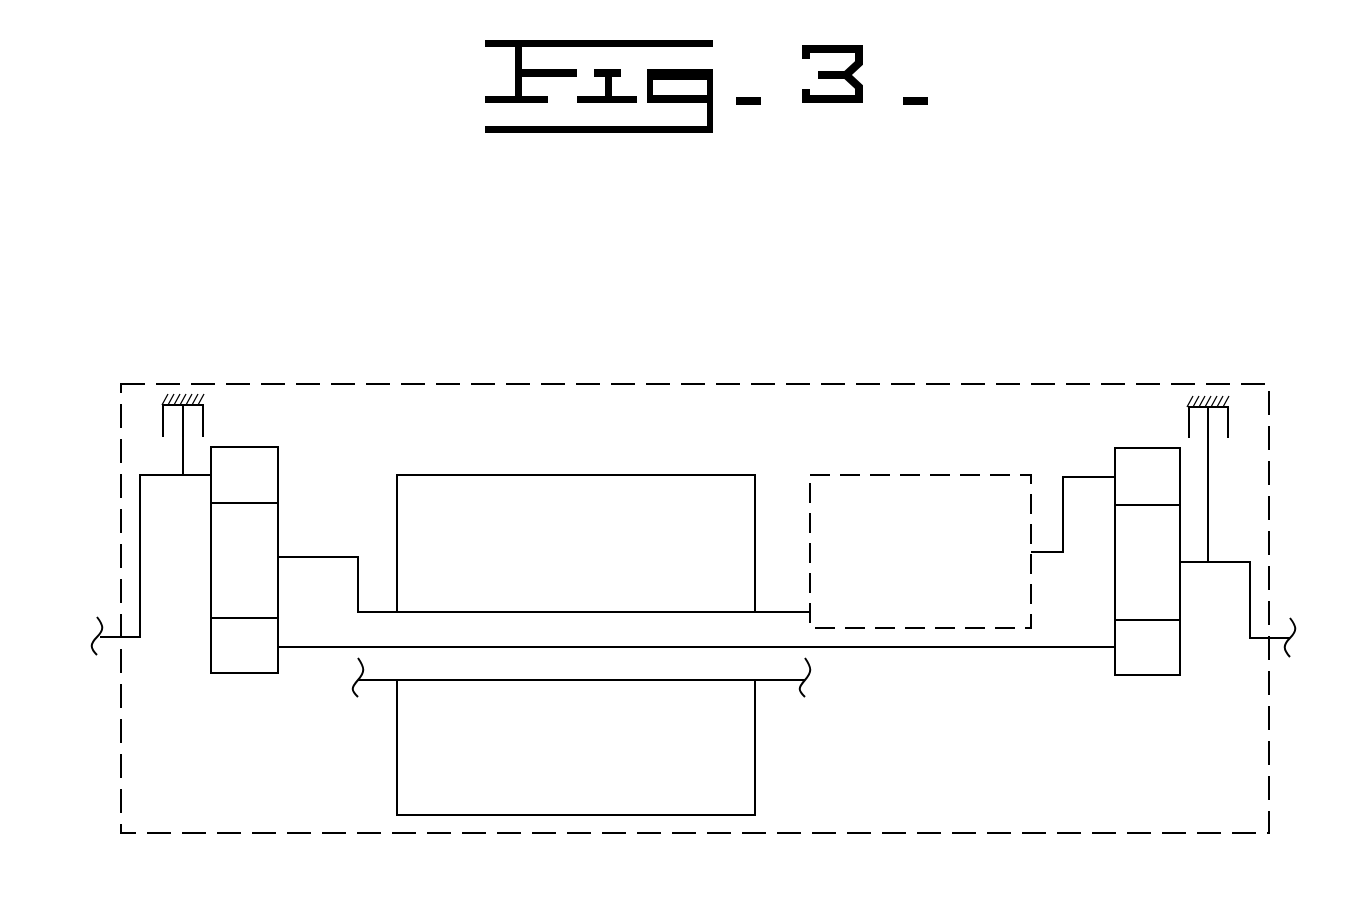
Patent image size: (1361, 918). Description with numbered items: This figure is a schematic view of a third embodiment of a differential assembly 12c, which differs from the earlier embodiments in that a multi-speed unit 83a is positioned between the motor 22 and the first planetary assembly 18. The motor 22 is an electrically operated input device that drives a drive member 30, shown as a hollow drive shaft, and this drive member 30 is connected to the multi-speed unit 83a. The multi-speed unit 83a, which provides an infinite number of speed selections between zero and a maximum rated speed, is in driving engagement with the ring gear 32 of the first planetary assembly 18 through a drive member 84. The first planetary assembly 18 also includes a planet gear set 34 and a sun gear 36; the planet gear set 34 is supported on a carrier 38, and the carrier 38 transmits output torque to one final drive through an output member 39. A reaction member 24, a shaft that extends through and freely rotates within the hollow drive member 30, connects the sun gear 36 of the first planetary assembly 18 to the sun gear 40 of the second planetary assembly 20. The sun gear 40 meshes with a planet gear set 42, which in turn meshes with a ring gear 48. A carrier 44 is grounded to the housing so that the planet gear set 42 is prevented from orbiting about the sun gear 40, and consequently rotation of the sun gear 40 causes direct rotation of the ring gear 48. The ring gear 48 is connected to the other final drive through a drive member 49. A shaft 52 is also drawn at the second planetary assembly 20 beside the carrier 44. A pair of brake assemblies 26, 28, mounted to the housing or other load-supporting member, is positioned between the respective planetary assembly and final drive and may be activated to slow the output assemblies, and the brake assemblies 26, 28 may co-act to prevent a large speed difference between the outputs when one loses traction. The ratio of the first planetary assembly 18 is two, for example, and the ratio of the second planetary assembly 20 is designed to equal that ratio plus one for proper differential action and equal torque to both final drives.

The differential assembly 12c is at (745, 380).
The motor 22 is at (578, 475).
The multi-speed unit 83a is at (893, 470).
The second planetary assembly 20 is at (265, 533).
The ring gear 48 is at (244, 475).
The planet gear set 42 is at (244, 560).
The sun gear 40 is at (244, 645).
The first planetary assembly 18 is at (1102, 565).
The ring gear 32 is at (1147, 476).
The planet gear set 34 is at (1147, 562).
The sun gear 36 is at (1147, 647).
The brake assembly 28 is at (150, 408).
The brake assembly 26 is at (1252, 395).
The drive member 49 is at (138, 557).
The shaft 52 is at (325, 557).
The carrier 44 is at (282, 558).
The drive member 30 is at (787, 612).
The reaction member 24 is at (930, 647).
The drive member 84 is at (1062, 495).
The output member 39 is at (1250, 580).
The carrier 38 is at (1180, 562).